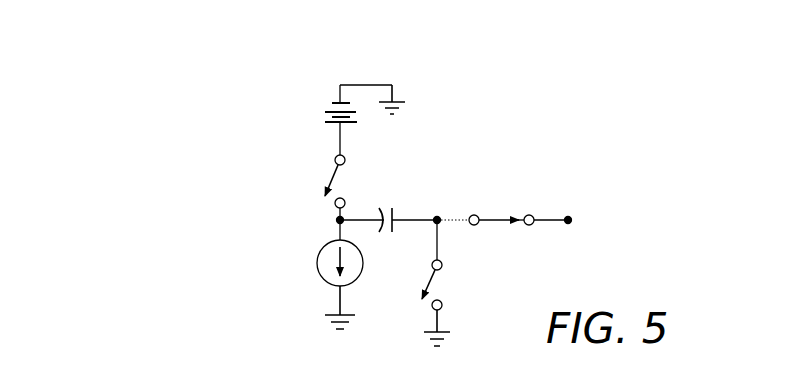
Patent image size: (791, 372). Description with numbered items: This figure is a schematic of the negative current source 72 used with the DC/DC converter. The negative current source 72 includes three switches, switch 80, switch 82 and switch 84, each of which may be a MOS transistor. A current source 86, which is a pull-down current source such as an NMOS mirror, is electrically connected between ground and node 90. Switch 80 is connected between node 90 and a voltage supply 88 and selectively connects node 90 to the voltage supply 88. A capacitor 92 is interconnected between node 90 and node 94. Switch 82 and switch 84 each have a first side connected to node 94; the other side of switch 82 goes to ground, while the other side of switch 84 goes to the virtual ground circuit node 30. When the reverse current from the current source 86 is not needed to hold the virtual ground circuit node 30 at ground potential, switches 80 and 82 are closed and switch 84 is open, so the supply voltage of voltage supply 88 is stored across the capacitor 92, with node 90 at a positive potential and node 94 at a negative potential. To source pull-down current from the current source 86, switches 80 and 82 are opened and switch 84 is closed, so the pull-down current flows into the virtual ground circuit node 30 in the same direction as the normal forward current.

The negative current source 72 is at (462, 118).
The voltage supply 88 is at (322, 113).
The switch 80 is at (343, 181).
The node 90 is at (336, 220).
The capacitor 92 is at (398, 213).
The node 94 is at (434, 223).
The switch 84 is at (493, 219).
The virtual ground circuit node 30 is at (568, 217).
The current source 86 is at (316, 260).
The switch 82 is at (436, 285).